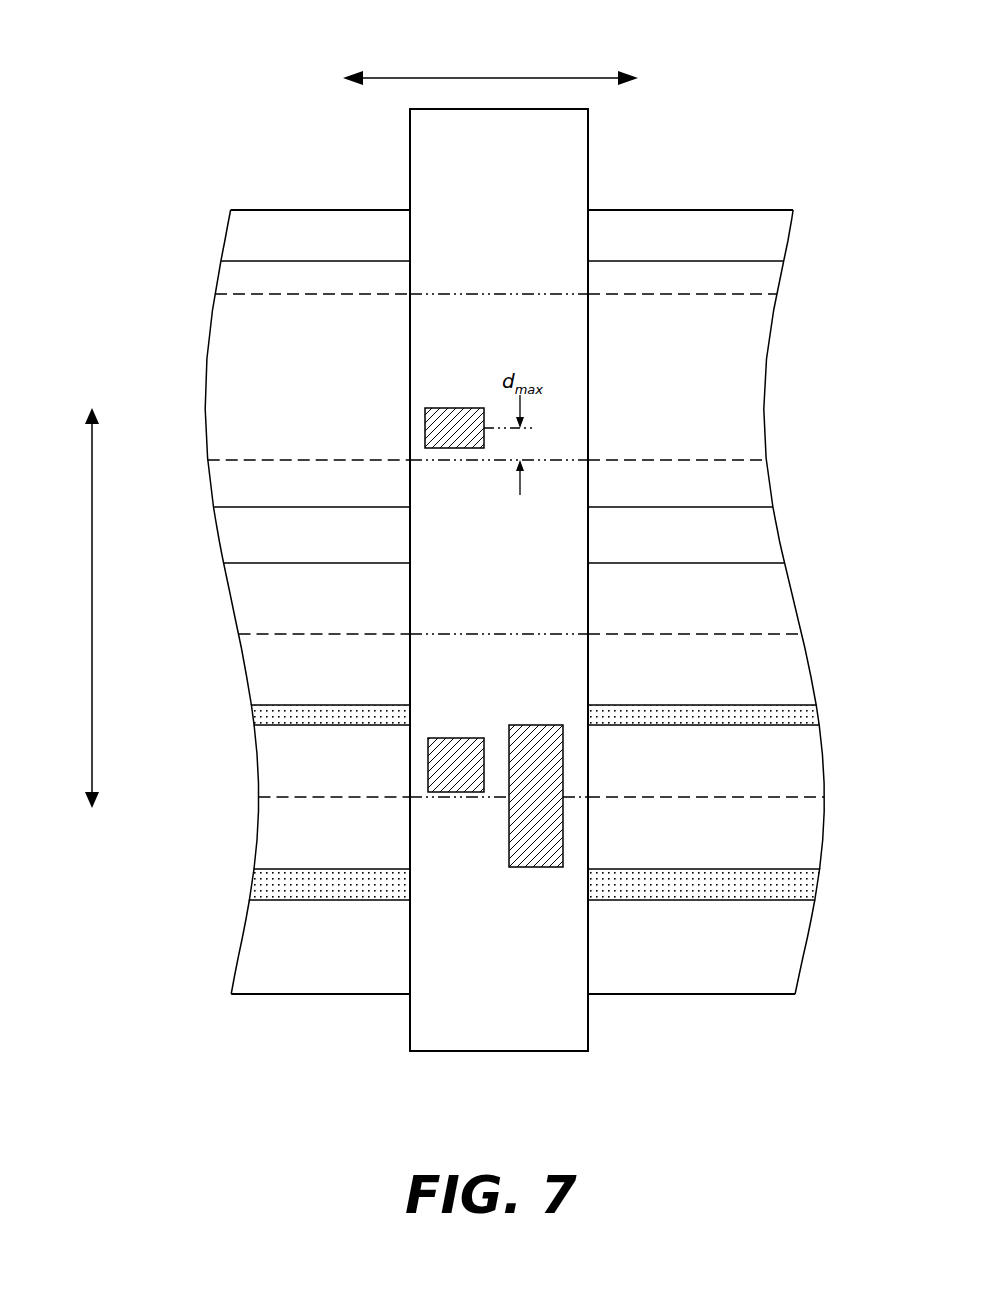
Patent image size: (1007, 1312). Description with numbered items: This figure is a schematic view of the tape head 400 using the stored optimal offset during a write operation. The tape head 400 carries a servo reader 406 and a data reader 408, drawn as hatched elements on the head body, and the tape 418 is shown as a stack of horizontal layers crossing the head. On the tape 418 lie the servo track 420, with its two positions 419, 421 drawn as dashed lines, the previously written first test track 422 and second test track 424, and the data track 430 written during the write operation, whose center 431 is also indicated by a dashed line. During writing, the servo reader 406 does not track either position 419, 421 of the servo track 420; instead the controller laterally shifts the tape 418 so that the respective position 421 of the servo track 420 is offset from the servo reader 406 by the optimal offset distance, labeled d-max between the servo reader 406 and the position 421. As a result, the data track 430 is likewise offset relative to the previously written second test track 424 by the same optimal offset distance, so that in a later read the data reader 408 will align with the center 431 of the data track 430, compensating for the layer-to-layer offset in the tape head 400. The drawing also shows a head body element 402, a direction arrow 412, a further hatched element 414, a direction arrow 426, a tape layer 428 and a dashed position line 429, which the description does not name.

The tape head 400 is at (143, 297).
The vertical pillar 402 is at (523, 1029).
The servo reader 406 is at (425, 436).
The data reader 408 is at (428, 755).
The vertical direction 412 is at (92, 600).
The third charge storage region 414 is at (563, 765).
The tape 418 is at (769, 236).
The position of the servo track 419 is at (750, 296).
The servo track 420 is at (738, 397).
The position of the servo track 421 is at (748, 461).
The first test track 422 is at (807, 715).
The second test track 424 is at (808, 884).
The horizontal direction 426 is at (500, 78).
The third dielectric layer 428 is at (767, 614).
The third reference plane 429 is at (778, 634).
The data track 430 is at (803, 772).
The center of the data track 431 is at (790, 797).